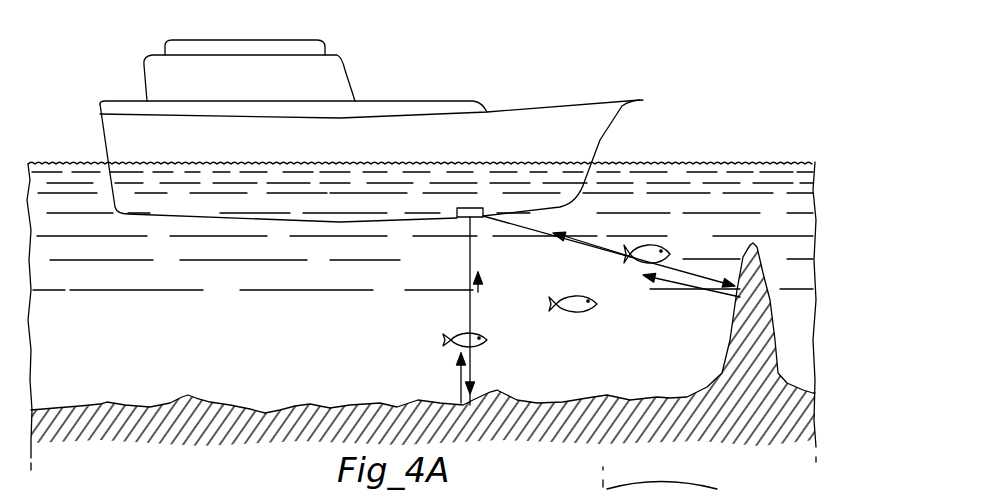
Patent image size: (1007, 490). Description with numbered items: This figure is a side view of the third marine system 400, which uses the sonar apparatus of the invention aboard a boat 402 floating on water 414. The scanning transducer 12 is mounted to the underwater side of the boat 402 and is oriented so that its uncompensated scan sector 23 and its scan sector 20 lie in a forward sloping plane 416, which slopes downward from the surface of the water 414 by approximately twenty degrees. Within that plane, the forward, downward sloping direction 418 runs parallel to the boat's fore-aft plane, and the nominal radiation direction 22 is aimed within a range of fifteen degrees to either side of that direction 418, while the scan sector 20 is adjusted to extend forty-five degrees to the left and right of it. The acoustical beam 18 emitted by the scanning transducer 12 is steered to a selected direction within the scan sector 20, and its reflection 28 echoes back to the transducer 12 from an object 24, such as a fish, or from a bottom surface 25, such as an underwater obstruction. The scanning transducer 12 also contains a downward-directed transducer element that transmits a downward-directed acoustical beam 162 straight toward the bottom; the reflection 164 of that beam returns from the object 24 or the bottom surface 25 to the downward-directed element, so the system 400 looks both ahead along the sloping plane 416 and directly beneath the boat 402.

The marine system 400 is at (632, 151).
The boat 402 is at (522, 125).
The scanning transducer 12 is at (470, 208).
The water 414 is at (257, 340).
The downward-directed acoustical beam 162 is at (470, 259).
The reflection of the downward-directed acoustical beam 164 is at (481, 306).
The forward sloping plane 416 is at (557, 228).
The forward, downward sloping direction 418 is at (646, 249).
The acoustical beam 18 is at (501, 264).
The scan sector 20 is at (534, 264).
The nominal radiation direction 22 is at (568, 264).
The uncompensated scan sector 23 is at (630, 258).
The reflection 28 is at (669, 264).
The object 24 is at (600, 306).
The bottom surface 25 is at (118, 407).